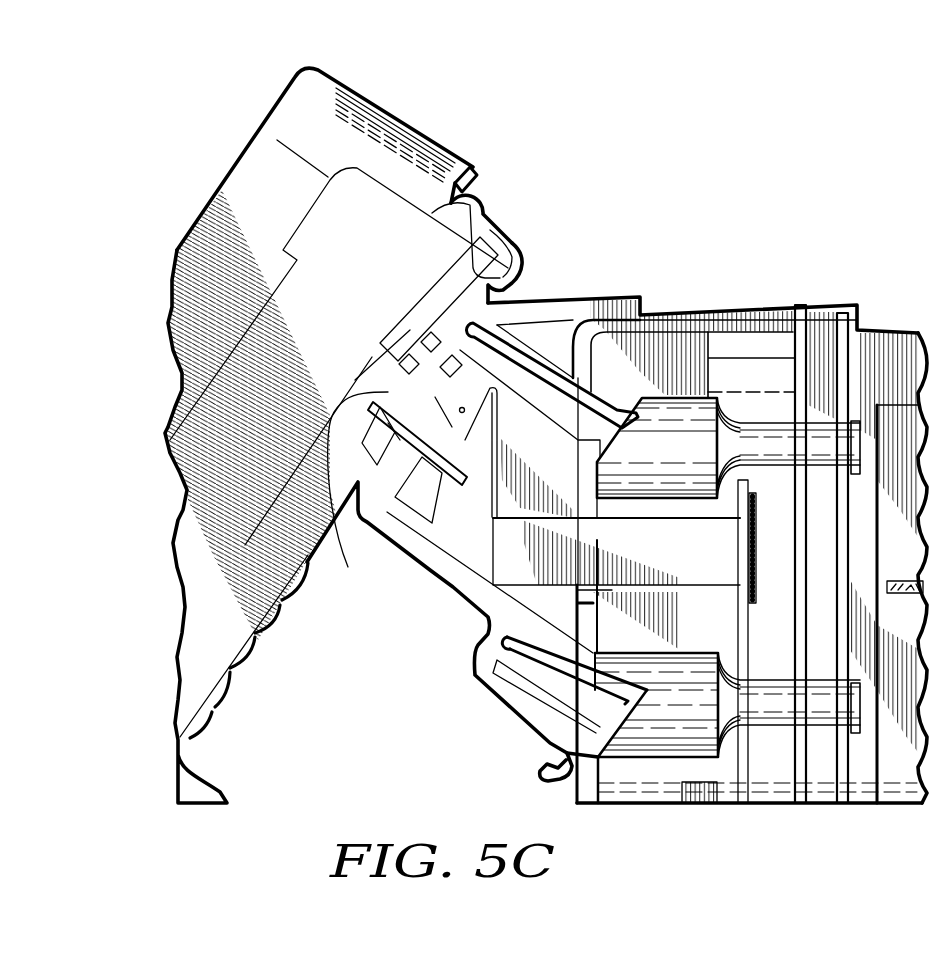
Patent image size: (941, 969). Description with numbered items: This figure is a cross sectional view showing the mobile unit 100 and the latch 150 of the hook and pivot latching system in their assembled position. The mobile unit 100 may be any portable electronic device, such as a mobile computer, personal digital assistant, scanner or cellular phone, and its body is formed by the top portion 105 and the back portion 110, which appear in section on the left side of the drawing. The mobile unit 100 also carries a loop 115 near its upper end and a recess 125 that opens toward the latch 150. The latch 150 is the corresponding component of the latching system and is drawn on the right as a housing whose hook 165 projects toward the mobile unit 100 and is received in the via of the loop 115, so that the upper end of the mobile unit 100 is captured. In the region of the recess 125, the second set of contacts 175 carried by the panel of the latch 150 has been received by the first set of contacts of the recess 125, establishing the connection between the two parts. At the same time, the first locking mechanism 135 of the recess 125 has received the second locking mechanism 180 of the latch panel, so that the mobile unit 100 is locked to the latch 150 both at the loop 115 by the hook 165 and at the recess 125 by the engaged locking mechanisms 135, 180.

The mobile unit 100 is at (196, 169).
The top portion 105 is at (392, 130).
The back portion 110 is at (205, 655).
The loop 115 is at (520, 276).
The recess 125 is at (425, 337).
The first locking mechanism 135 is at (358, 492).
The latch 150 is at (821, 283).
The hook 165 is at (440, 262).
The second set of contacts 175 is at (472, 527).
The second locking mechanism 180 is at (383, 513).